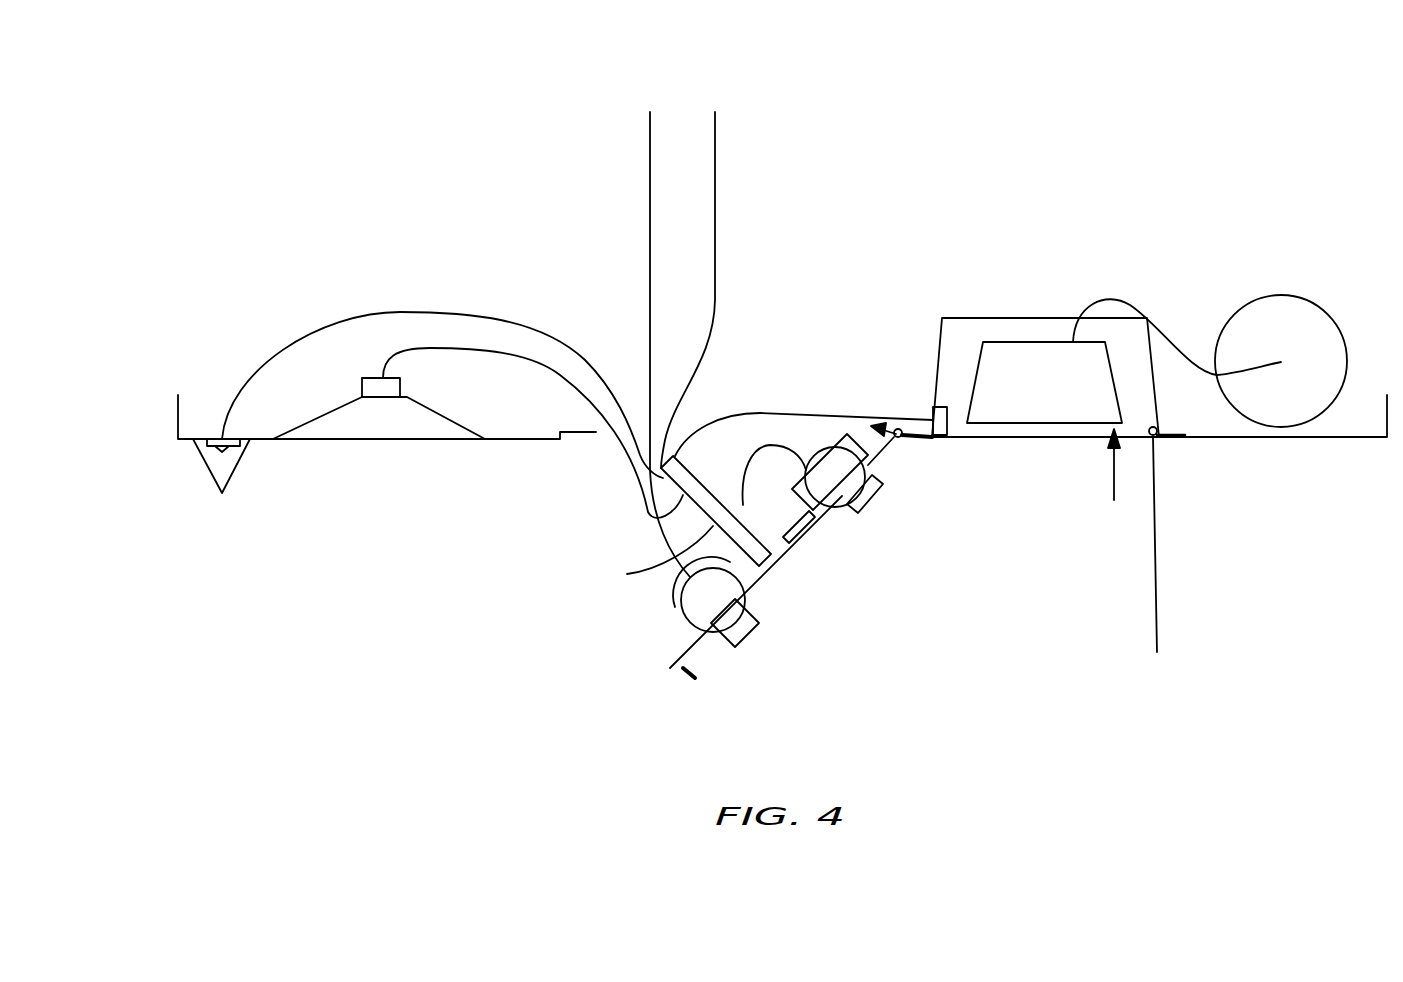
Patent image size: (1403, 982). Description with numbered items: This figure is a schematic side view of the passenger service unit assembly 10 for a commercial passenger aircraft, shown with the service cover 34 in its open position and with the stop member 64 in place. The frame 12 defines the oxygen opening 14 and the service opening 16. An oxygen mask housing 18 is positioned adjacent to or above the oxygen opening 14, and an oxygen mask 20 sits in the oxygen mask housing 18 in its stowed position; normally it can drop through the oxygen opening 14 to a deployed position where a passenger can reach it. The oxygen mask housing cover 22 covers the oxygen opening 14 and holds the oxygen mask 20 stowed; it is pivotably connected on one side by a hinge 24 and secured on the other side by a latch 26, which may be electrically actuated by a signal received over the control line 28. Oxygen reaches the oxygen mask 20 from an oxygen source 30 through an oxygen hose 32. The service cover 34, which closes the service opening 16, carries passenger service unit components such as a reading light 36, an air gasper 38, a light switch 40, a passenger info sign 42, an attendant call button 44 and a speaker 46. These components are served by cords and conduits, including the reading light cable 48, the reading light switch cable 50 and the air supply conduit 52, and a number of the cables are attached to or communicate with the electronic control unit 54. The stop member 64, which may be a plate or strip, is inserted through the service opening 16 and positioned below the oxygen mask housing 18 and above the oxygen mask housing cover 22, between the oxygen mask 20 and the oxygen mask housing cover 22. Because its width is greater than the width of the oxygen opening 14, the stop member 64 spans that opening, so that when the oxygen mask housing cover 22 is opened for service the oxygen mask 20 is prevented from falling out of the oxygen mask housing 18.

The passenger service unit assembly 10 is at (1232, 146).
The frame 12 is at (185, 440).
The oxygen opening 14 is at (1105, 483).
The service opening 16 is at (885, 447).
The oxygen mask housing 18 is at (962, 318).
The oxygen mask 20 is at (1045, 360).
The oxygen mask housing cover 22 is at (1160, 606).
The hinge 24 is at (897, 428).
The latch 26 is at (940, 437).
The control line 28 is at (792, 410).
The oxygen source 30 is at (1327, 313).
The oxygen hose 32 is at (1112, 297).
The service cover 34 is at (725, 542).
The reading light 36 is at (835, 477).
The air gasper 38 is at (713, 600).
The light switch 40 is at (808, 540).
The passenger info sign 42 is at (232, 473).
The attendant call button 44 is at (223, 447).
The speaker 46 is at (430, 408).
The reading light cable 48 is at (765, 446).
The reading light switch cable 50 is at (763, 528).
The air supply conduit 52 is at (648, 207).
The electronic control unit 54 is at (627, 574).
The stop member 64 is at (982, 438).